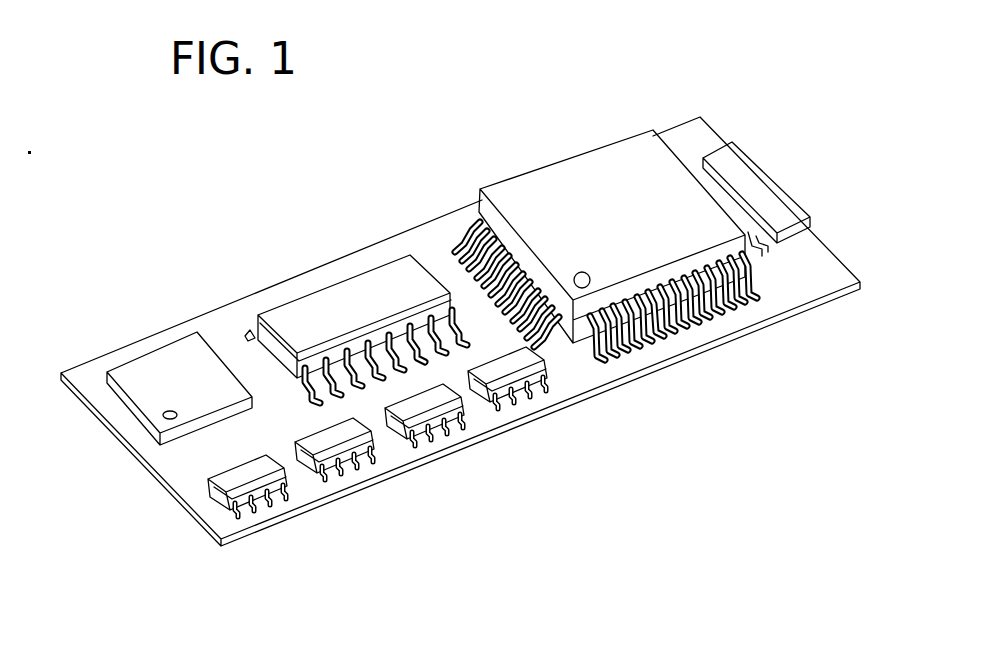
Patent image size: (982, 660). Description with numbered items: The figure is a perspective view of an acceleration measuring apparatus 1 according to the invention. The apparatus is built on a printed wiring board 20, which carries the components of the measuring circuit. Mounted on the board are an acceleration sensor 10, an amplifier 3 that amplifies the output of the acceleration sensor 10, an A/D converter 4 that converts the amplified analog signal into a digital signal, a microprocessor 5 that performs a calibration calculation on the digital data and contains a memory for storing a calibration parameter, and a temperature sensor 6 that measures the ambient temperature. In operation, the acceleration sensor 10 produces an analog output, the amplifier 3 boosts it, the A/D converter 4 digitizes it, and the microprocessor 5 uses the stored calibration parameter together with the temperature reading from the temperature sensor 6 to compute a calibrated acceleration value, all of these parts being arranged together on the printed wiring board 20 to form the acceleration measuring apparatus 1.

The acceleration measuring apparatus 1 is at (774, 470).
The printed wiring board 20 is at (297, 520).
The acceleration sensor 10 is at (178, 352).
The A/D converter 4 is at (372, 293).
The microprocessor 5 is at (567, 197).
The amplifier 3 is at (352, 445).
The temperature sensor 6 is at (545, 400).